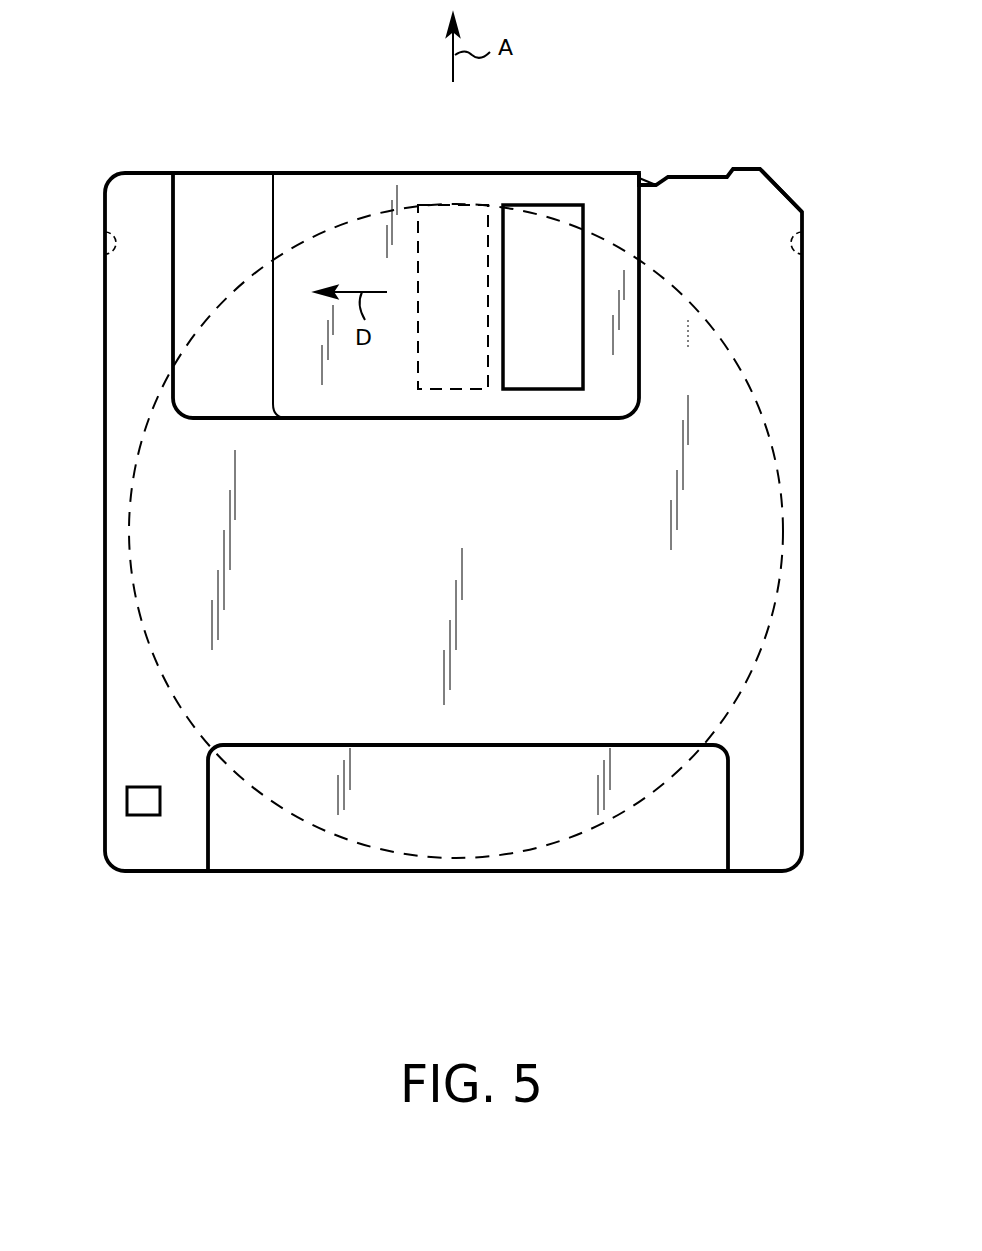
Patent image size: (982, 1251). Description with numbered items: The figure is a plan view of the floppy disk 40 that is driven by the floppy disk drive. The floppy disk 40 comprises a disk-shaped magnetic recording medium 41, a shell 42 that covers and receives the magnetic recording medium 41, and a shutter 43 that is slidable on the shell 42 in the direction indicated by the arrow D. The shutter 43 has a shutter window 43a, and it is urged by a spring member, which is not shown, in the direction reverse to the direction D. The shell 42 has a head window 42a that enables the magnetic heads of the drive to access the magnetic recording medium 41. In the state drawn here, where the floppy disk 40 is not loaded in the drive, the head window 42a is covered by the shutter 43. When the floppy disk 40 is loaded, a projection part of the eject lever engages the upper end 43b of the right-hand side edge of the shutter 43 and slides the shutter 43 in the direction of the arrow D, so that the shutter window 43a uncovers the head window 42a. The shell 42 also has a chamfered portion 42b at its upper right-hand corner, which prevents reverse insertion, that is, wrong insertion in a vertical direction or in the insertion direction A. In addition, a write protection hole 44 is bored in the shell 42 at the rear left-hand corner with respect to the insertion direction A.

The floppy disk 40 is at (166, 875).
The magnetic recording medium 41 is at (750, 672).
The shell 42 is at (790, 557).
The head window 42a is at (488, 236).
The chamfered portion 42b is at (780, 188).
The shutter 43 is at (355, 400).
The shutter window 43a is at (499, 392).
The upper end of the right-hand side edge of the shutter 43b is at (650, 171).
The write protection hole 44 is at (125, 800).